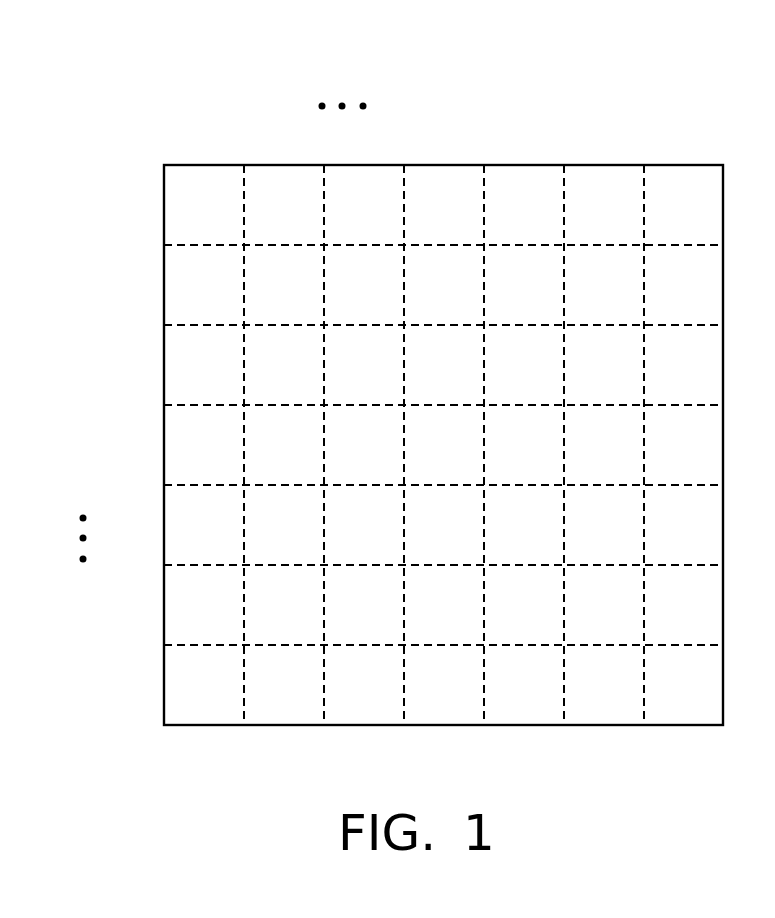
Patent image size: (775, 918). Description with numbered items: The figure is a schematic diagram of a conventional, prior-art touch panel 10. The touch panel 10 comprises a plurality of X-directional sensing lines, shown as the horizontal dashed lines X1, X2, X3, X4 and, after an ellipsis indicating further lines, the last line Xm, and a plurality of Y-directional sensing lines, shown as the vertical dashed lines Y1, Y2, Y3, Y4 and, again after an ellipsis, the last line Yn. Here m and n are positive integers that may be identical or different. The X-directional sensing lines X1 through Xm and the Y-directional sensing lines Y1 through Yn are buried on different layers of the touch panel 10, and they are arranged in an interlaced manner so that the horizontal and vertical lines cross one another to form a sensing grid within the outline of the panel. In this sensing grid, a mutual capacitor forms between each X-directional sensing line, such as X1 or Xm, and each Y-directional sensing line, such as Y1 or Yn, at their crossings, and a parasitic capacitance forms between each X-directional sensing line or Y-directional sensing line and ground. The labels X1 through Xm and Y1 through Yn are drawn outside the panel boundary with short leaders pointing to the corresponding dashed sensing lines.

The touch panel 10 is at (95, 58).
The X-directional sensing line X1 is at (192, 245).
The X-directional sensing line X2 is at (192, 325).
The X-directional sensing line X3 is at (192, 405).
The X-directional sensing line X4 is at (192, 485).
The X-directional sensing line Xm is at (192, 645).
The Y-directional sensing line Y1 is at (644, 196).
The Y-directional sensing line Y2 is at (564, 196).
The Y-directional sensing line Y3 is at (484, 196).
The Y-directional sensing line Y4 is at (404, 196).
The Y-directional sensing line Yn is at (244, 196).